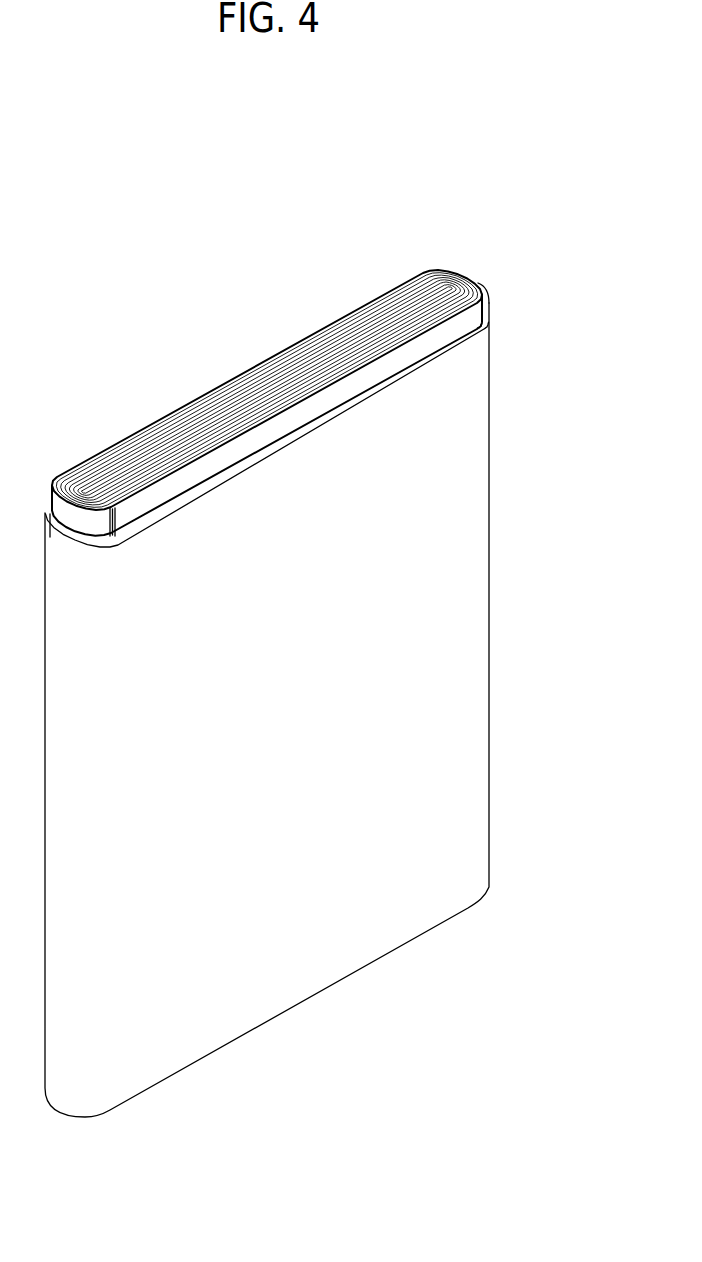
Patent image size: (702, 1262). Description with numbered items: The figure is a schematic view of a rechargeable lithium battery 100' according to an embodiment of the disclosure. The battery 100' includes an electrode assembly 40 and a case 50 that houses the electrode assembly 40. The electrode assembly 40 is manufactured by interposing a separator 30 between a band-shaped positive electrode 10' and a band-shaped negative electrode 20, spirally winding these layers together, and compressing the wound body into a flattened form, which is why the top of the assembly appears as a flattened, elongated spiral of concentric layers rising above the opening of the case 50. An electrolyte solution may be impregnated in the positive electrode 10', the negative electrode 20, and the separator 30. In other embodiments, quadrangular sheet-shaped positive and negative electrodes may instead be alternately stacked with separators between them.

The rechargeable lithium battery 100' is at (195, 176).
The positive electrode 10' is at (303, 388).
The negative electrode 20 is at (445, 277).
The separator 30 is at (468, 279).
The electrode assembly 40 is at (200, 377).
The case 50 is at (460, 583).